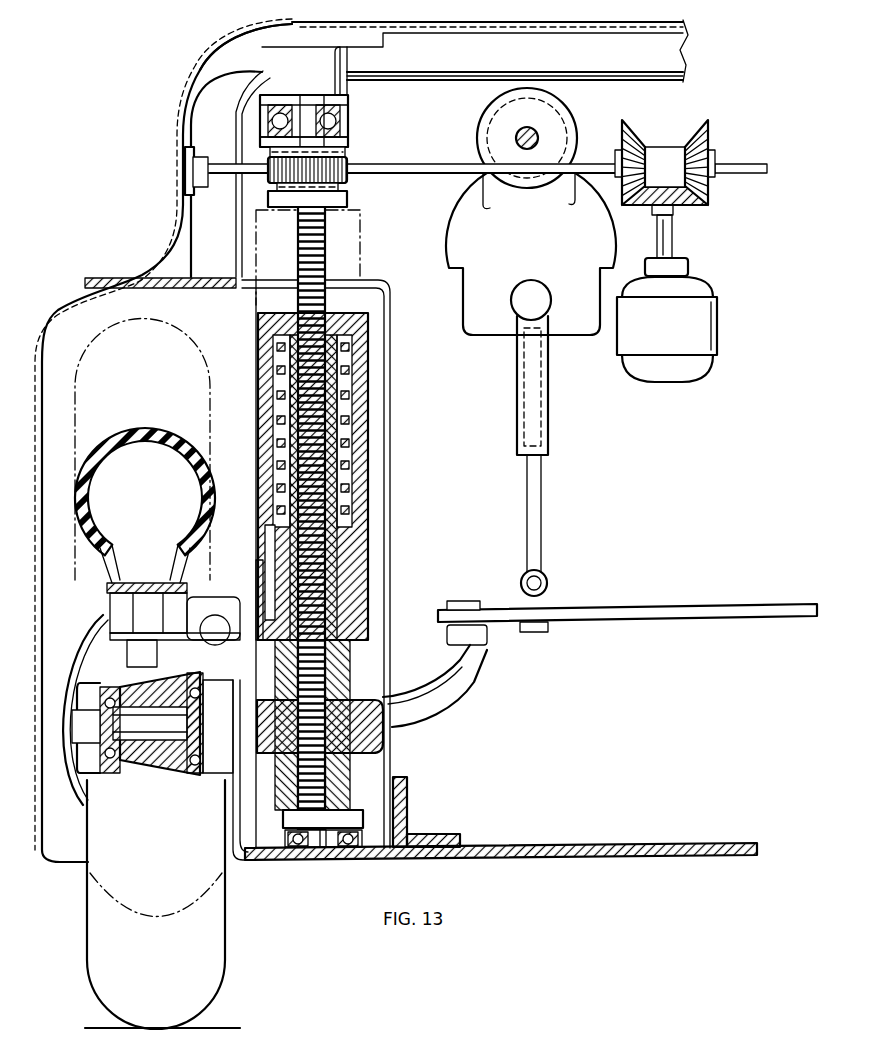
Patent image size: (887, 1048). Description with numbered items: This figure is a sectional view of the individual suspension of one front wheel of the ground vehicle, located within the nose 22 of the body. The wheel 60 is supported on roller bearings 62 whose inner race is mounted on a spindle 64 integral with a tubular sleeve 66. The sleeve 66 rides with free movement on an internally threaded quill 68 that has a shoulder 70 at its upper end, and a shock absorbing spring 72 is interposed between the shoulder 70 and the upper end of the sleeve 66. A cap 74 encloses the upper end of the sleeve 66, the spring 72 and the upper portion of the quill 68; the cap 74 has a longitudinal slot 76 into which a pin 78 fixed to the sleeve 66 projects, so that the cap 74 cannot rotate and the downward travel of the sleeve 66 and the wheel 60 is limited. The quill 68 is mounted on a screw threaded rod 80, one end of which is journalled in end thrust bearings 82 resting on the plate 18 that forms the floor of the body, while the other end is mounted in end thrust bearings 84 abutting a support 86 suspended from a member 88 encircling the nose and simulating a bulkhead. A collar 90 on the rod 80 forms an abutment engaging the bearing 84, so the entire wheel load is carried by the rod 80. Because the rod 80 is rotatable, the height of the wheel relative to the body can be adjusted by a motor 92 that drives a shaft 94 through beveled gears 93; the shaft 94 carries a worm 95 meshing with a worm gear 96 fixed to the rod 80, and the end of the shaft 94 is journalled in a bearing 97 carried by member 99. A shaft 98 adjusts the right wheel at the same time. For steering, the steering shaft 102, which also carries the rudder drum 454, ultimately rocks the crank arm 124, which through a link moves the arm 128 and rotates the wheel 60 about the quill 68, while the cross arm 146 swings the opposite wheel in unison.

The plate 18 is at (513, 856).
The nose 22 is at (189, 101).
The wheel 60 is at (98, 935).
The roller bearings 62 is at (108, 690).
The spindle 64 is at (136, 735).
The tubular sleeve 66 is at (350, 560).
The internally threaded quill 68 is at (326, 456).
The shoulder 70 is at (358, 338).
The shock absorbing spring 72 is at (350, 415).
The cap 74 is at (262, 365).
The longitudinal slot 76 is at (270, 551).
The pin 78 is at (262, 590).
The screw threaded rod 80 is at (318, 252).
The end thrust bearings 82 is at (350, 848).
The end thrust bearings 84 is at (348, 127).
The support 86 is at (348, 61).
The member 88 is at (214, 68).
The collar 90 is at (268, 140).
The motor 92 is at (718, 330).
The beveled gears 93 is at (645, 151).
The shaft 94 is at (408, 164).
The worm 95 is at (345, 154).
The worm gear 96 is at (346, 181).
The bearing 97 is at (200, 158).
The shaft 98 is at (735, 164).
The member 99 is at (185, 166).
The shaft 102 is at (516, 133).
The crank arm 124 is at (548, 375).
The arm 128 is at (474, 660).
The cross arm 146 is at (704, 606).
The drum 454 is at (578, 111).